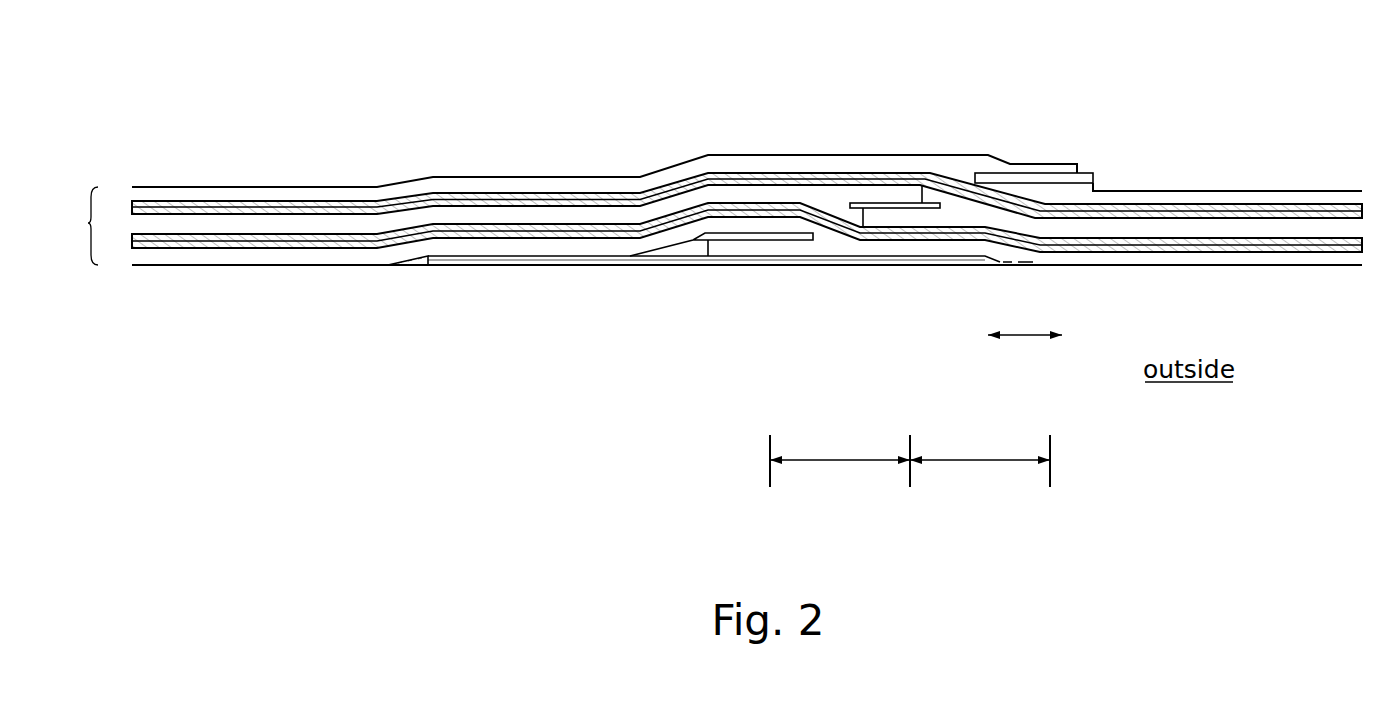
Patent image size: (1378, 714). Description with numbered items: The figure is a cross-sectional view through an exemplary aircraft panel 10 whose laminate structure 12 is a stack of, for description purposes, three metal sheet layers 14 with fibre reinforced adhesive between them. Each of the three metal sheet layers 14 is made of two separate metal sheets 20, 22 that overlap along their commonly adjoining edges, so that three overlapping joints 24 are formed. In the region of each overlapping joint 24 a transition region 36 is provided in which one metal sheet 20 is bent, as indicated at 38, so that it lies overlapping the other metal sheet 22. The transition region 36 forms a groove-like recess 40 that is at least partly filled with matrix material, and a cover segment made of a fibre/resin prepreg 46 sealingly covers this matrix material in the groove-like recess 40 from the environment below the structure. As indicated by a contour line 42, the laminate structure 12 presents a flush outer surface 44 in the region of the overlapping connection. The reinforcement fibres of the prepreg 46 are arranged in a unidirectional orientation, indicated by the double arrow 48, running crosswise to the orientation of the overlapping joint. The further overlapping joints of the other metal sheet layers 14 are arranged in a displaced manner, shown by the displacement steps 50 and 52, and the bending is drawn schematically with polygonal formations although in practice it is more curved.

The aircraft panel 10 is at (1238, 120).
The laminate structure 12 is at (707, 171).
The metal sheet layers 14 is at (175, 188).
The metal sheet 20 is at (748, 227).
The metal sheet 22 is at (762, 248).
The overlapping joint 24 is at (773, 235).
The transition region 36 is at (653, 277).
The bend 38 is at (668, 240).
The groove-like recess 40 is at (680, 250).
The contour line 42 is at (405, 267).
The flush outer surface 44 is at (1008, 178).
The fibre/resin prepreg 46 is at (450, 267).
The double arrow 48 is at (1027, 335).
The displacement step 50 is at (845, 462).
The displacement step 52 is at (978, 462).